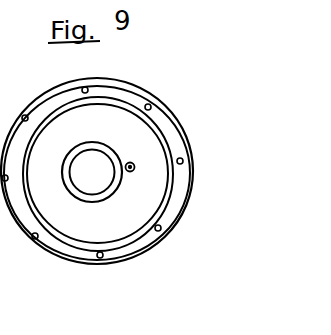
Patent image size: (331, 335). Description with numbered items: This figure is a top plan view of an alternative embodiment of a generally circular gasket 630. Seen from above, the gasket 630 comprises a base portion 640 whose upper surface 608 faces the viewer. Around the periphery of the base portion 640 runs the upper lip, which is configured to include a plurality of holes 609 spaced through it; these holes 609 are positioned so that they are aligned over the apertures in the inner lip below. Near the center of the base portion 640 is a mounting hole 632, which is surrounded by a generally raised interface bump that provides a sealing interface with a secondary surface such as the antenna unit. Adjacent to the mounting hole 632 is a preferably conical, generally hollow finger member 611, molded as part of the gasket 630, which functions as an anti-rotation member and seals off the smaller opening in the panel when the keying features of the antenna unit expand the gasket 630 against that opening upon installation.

The gasket 630 is at (196, 98).
The upper surface 608 is at (105, 134).
The holes 609 is at (183, 161).
The mounting hole 632 is at (87, 182).
The finger member 611 is at (134, 170).
The base portion 640 is at (125, 223).